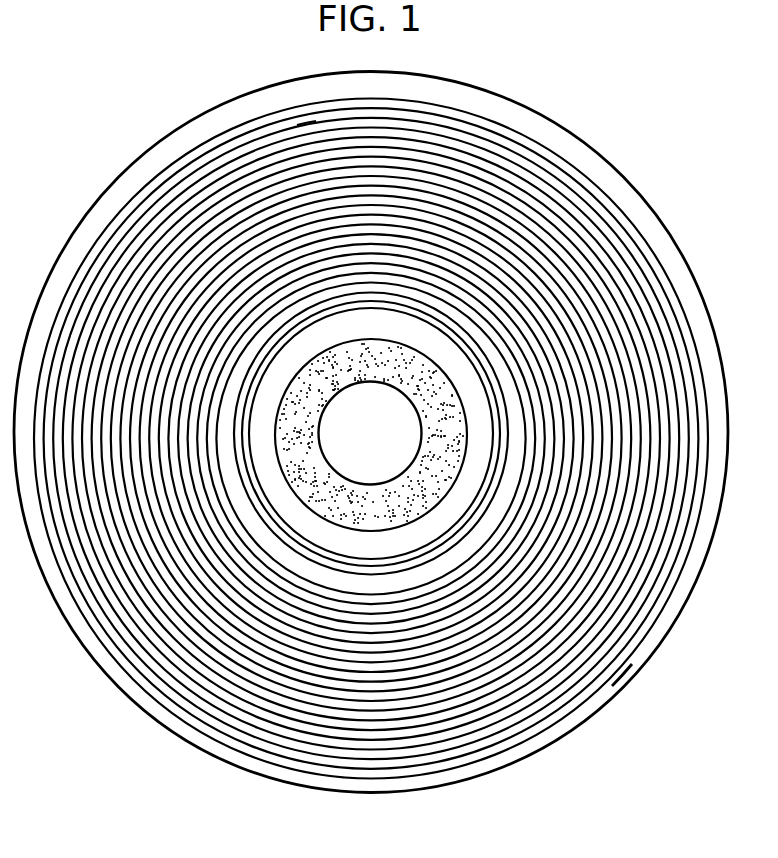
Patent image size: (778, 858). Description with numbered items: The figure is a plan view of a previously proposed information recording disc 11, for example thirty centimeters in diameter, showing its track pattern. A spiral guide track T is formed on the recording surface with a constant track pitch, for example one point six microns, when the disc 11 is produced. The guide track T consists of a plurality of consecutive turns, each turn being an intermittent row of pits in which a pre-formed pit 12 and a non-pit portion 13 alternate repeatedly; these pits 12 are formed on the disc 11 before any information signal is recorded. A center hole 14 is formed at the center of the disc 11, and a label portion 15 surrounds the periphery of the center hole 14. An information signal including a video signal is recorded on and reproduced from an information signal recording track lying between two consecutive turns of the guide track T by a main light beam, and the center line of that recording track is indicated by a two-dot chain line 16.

The information recording disc 11 is at (487, 81).
The pre-formed pit 12 is at (550, 147).
The non-pit portion 13 is at (573, 168).
The center hole 14 is at (351, 482).
The label portion 15 is at (348, 344).
The two-dot chain line 16 is at (303, 117).
The spiral guide track T is at (622, 675).